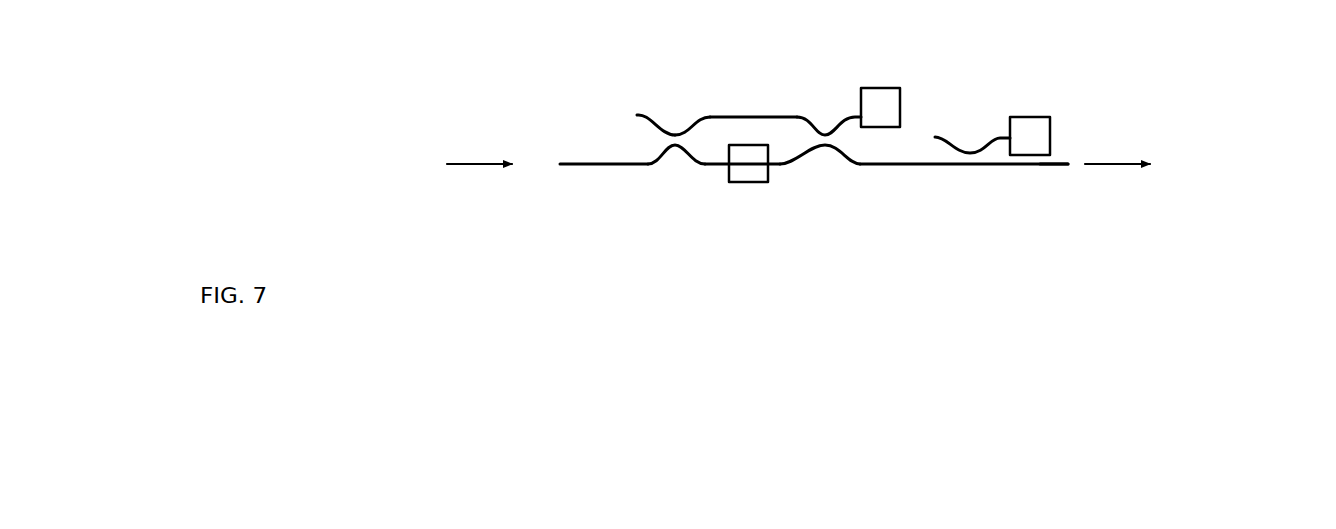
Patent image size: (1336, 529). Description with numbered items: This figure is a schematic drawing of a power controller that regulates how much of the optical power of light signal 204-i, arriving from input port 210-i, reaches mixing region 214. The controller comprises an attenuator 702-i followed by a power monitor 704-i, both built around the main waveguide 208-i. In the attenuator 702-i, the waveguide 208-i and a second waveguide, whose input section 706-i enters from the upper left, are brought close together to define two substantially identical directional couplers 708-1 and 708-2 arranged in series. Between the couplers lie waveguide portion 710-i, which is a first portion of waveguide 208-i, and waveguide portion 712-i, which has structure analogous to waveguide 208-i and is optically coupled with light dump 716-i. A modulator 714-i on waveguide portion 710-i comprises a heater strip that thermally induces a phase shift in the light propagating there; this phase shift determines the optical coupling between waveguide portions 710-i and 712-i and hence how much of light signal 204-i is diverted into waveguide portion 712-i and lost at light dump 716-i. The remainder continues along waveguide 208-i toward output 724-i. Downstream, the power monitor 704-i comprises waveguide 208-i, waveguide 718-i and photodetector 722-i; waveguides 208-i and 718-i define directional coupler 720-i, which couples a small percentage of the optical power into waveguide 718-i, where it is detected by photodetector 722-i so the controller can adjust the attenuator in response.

The input port 210-i is at (346, 192).
The mixing region 214 is at (1187, 143).
The light signal 204-i is at (488, 165).
The waveguide 208-i is at (573, 166).
The attenuator 702-i is at (708, 44).
The power monitor 704-i is at (928, 58).
The upper input waveguide 706-i is at (645, 118).
The directional coupler 708-1 is at (671, 90).
The directional coupler 708-2 is at (830, 182).
The waveguide portion 710-i is at (777, 166).
The waveguide portion 712-i is at (756, 114).
The modulator 714-i is at (740, 182).
The light dump 716-i is at (860, 95).
The waveguide 718-i is at (995, 136).
The directional coupler 720-i is at (975, 184).
The photodetector 722-i is at (1028, 116).
The output 724-i is at (1058, 166).